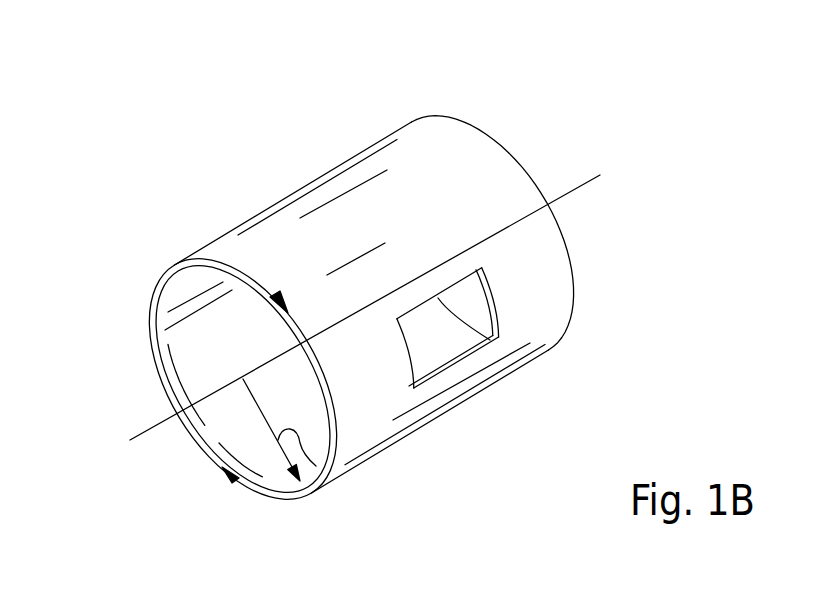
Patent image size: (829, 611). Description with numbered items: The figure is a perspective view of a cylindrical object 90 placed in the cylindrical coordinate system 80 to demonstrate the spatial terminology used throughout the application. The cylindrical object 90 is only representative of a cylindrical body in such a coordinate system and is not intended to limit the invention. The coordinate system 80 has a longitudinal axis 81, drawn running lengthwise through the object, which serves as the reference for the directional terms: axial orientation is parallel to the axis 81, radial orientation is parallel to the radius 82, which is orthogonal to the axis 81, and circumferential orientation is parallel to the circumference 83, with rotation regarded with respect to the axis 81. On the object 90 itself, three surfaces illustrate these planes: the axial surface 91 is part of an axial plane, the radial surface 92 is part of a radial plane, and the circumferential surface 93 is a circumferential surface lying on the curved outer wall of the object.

The cylindrical coordinate system 80 is at (517, 137).
The longitudinal axis 81 is at (140, 440).
The radius 82 is at (300, 495).
The circumference 83 is at (156, 288).
The cylindrical object 90 is at (397, 122).
The axial surface 91 is at (476, 345).
The radial surface 92 is at (258, 486).
The circumferential surface 93 is at (340, 213).